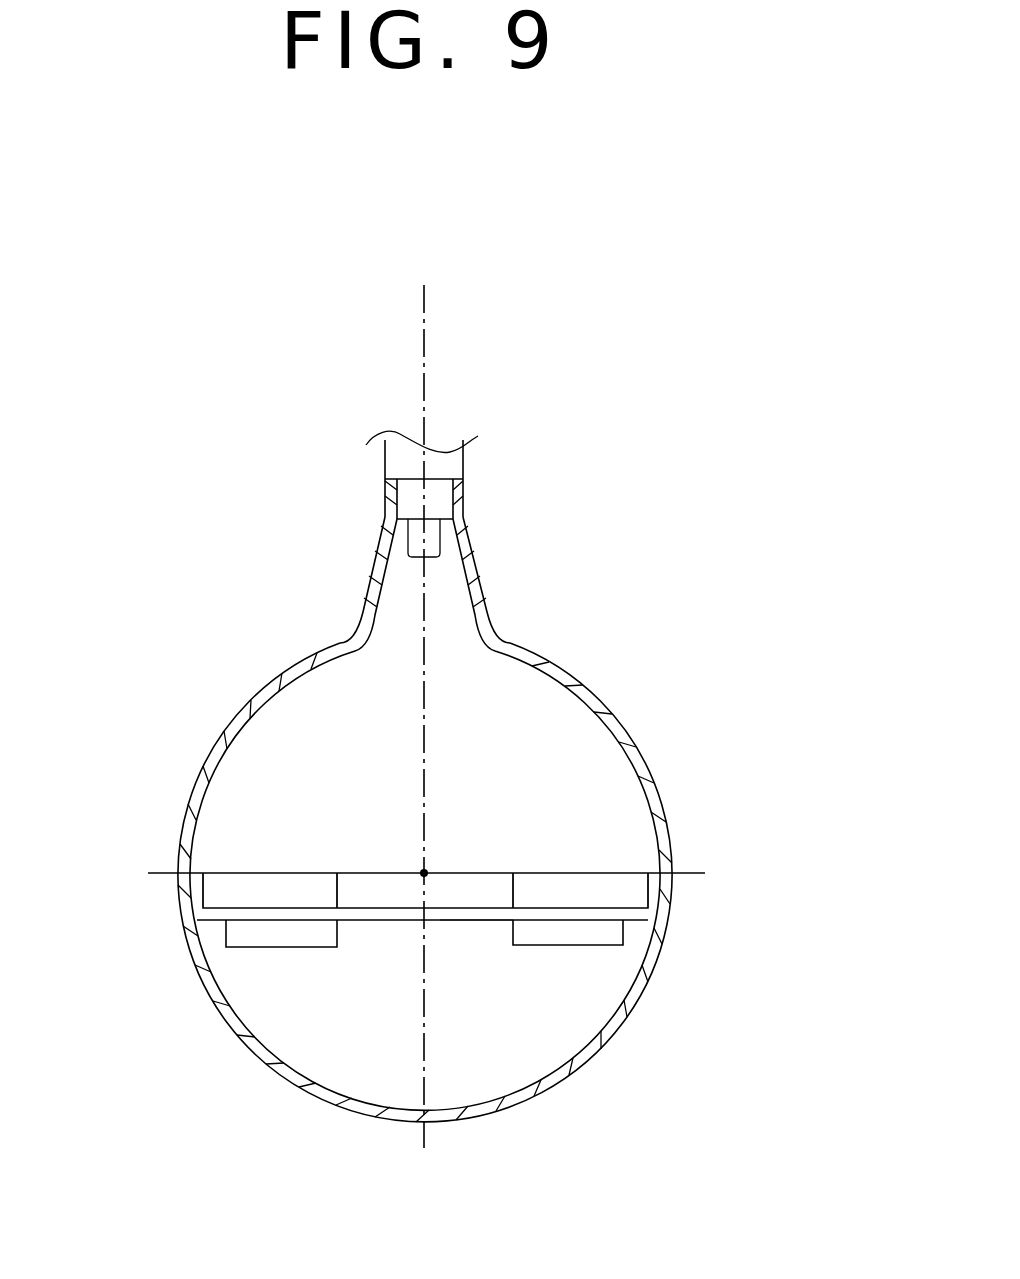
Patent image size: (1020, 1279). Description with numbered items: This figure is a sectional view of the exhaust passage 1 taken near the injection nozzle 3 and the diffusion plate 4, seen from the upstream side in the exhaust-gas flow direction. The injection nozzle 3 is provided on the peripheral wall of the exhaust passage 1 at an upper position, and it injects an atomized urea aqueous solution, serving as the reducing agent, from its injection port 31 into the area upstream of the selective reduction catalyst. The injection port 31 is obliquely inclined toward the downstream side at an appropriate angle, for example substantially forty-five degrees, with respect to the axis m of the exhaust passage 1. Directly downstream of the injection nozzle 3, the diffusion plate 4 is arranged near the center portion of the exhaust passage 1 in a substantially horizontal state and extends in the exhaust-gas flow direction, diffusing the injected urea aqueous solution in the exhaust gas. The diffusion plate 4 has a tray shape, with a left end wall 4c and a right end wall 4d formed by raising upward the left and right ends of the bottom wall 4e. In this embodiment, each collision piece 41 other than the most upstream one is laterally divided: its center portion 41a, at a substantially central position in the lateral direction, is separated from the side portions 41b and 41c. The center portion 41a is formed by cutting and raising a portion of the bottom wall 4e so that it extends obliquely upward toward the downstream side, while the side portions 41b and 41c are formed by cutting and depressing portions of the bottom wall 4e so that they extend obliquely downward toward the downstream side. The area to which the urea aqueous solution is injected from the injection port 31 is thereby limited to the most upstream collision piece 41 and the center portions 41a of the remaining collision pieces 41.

The exhaust passage 1 is at (655, 759).
The injection nozzle 3 is at (460, 487).
The injection port 31 is at (433, 558).
The diffusion plate 4 is at (214, 940).
The left end wall 4c is at (652, 893).
The right end wall 4d is at (200, 895).
The bottom wall 4e is at (495, 923).
The collision piece 41 is at (312, 868).
The center portion 41a is at (485, 883).
The side portion 41b is at (578, 933).
The side portion 41c is at (298, 932).
The axis m is at (424, 873).